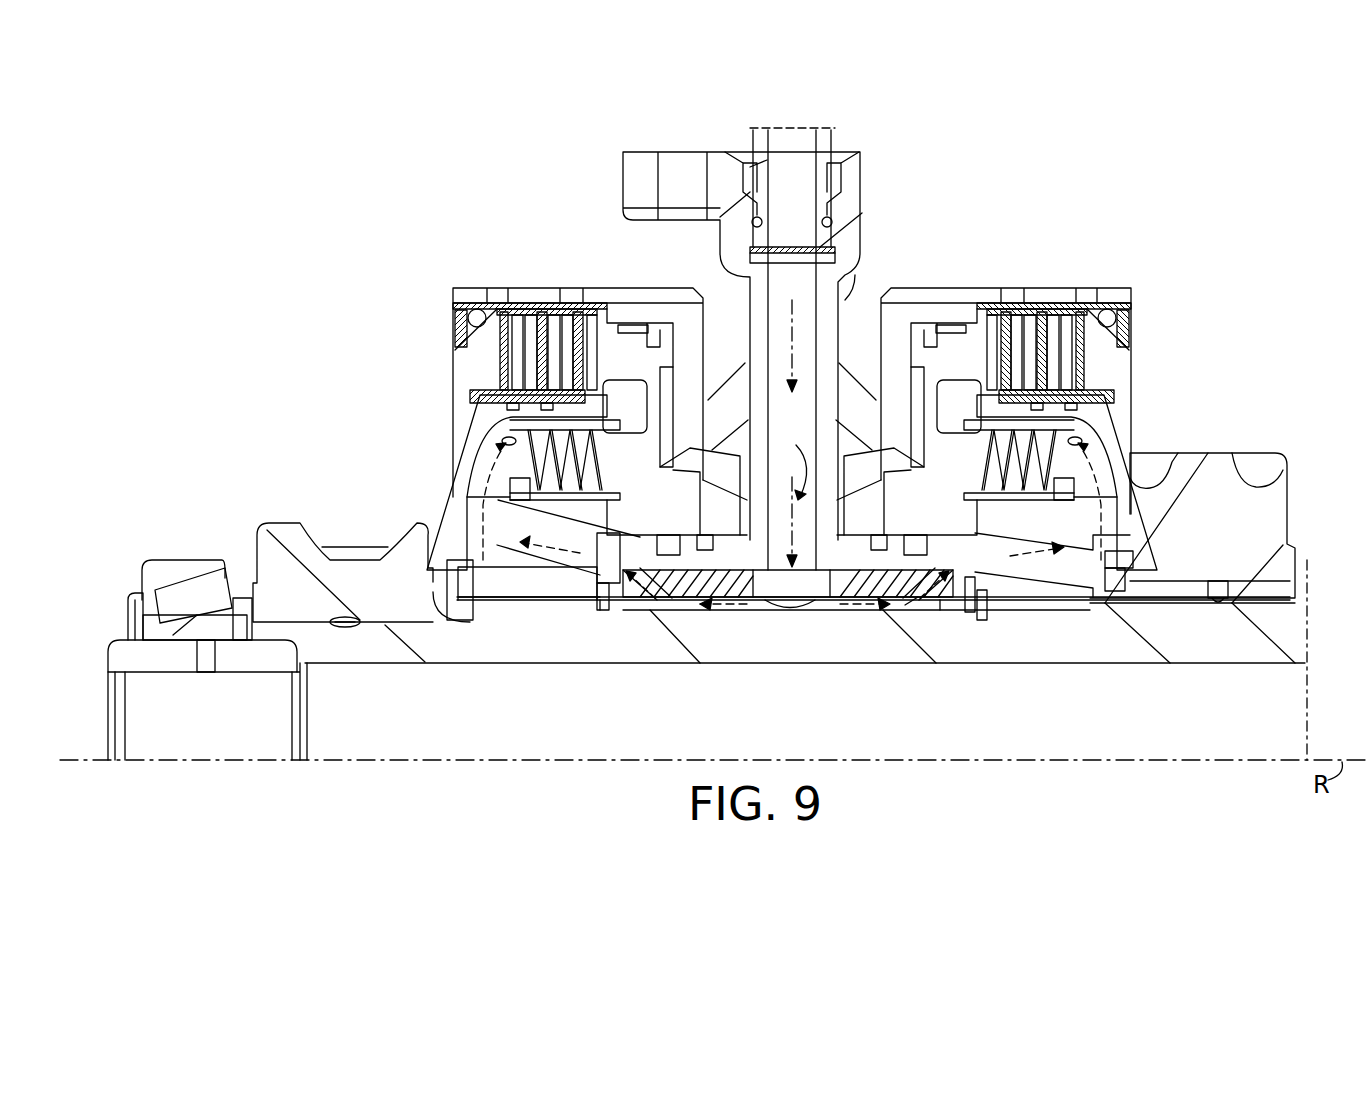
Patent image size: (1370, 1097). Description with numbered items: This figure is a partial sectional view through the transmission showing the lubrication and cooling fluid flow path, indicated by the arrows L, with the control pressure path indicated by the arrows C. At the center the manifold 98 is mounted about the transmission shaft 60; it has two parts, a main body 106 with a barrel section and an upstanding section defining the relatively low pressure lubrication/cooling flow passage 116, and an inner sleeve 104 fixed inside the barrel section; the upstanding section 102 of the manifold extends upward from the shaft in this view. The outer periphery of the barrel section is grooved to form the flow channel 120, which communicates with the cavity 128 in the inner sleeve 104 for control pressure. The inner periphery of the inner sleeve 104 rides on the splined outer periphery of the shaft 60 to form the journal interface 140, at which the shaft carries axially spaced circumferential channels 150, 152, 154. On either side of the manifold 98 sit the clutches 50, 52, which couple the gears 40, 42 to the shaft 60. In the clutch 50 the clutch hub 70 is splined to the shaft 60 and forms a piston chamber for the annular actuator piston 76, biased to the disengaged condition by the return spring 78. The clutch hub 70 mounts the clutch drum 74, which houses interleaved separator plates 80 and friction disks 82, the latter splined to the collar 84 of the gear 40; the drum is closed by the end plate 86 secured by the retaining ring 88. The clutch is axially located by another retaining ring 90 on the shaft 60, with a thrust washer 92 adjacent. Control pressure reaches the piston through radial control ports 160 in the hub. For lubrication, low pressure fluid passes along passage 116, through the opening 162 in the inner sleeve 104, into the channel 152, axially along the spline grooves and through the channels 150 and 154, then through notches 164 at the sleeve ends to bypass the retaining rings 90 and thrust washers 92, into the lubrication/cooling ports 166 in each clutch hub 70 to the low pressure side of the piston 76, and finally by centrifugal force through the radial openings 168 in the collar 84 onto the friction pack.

The gear 40 is at (290, 535).
The gear 42 is at (1275, 512).
The clutch 50 is at (448, 285).
The clutch 52 is at (1078, 284).
The transmission shaft 60 is at (1285, 630).
The clutch hub 70 is at (497, 598).
The clutch drum 74 is at (540, 300).
The actuator piston 76 is at (620, 330).
The return spring 78 is at (528, 486).
The separator plates 80 is at (564, 320).
The friction disks 82 is at (497, 382).
The collar 84 is at (483, 425).
The end plate 86 is at (458, 354).
The retaining ring 88 is at (452, 332).
The retaining ring 90 is at (605, 607).
The thrust washer 92 is at (612, 550).
The manifold 98 is at (860, 182).
The shaft 102 is at (815, 138).
The inner sleeve 104 is at (968, 578).
The main body 106 is at (848, 234).
The lubrication/cooling flow passage 116 is at (748, 345).
The flow channel 120 is at (650, 605).
The cavity 128 is at (915, 607).
The journal interface 140 is at (790, 612).
The circumferential channel 150 is at (645, 605).
The circumferential channel 152 is at (782, 600).
The circumferential channel 154 is at (945, 612).
The control ports 160 is at (700, 440).
The opening 162 is at (800, 598).
The notches 164 is at (630, 602).
The lubrication/cooling ports 166 is at (435, 540).
The radial openings 168 is at (503, 457).
The lubrication/cooling flow path arrows L is at (812, 360).
The control pressure flow path arrows C is at (790, 470).